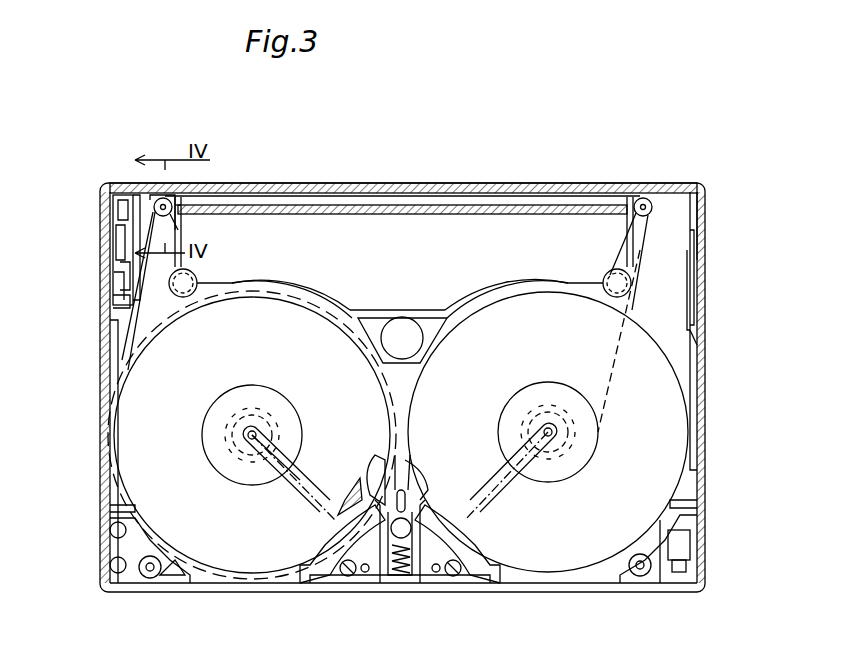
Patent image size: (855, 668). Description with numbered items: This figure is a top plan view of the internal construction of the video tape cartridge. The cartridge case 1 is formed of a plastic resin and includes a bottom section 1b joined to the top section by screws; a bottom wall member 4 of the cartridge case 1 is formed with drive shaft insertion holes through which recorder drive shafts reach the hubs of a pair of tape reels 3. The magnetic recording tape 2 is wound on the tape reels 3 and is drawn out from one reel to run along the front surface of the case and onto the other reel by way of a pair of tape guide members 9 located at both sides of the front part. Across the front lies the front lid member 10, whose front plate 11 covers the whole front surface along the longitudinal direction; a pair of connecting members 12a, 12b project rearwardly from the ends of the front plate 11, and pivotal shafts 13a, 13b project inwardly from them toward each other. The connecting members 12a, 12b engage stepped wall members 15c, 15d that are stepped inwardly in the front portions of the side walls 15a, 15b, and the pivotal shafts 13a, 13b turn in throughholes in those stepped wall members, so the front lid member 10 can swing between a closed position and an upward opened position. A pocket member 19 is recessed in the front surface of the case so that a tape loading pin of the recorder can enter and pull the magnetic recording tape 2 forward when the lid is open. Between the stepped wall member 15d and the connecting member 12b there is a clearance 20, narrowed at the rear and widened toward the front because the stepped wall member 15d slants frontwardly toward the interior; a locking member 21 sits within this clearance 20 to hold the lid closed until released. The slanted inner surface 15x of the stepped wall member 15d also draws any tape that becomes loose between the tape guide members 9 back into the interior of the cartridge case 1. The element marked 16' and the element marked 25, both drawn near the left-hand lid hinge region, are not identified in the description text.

The cartridge case 1 is at (708, 412).
The bottom section 1b is at (706, 468).
The magnetic recording tape 2 is at (497, 204).
The tape reels 3 is at (250, 555).
The bottom wall member 4 is at (665, 325).
The tape guide members 9 is at (170, 203).
The front lid member 10 is at (318, 183).
The front plate 11 is at (378, 185).
The connecting member 12a is at (100, 246).
The connecting member 12b is at (706, 223).
The pivotal shaft 13a is at (160, 288).
The pivotal shaft 13b is at (688, 278).
The side wall 15a is at (100, 345).
The side wall 15b is at (703, 352).
The stepped wall member 15c is at (700, 253).
The stepped wall member 15d is at (120, 272).
The inner surface 15x is at (136, 195).
The lid arm 16' is at (163, 291).
The pocket member 19 is at (455, 251).
The clearance 20 is at (120, 195).
The locking member 21 is at (114, 275).
The lock member 25 is at (112, 290).